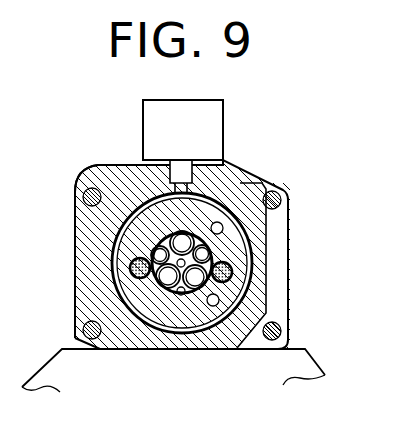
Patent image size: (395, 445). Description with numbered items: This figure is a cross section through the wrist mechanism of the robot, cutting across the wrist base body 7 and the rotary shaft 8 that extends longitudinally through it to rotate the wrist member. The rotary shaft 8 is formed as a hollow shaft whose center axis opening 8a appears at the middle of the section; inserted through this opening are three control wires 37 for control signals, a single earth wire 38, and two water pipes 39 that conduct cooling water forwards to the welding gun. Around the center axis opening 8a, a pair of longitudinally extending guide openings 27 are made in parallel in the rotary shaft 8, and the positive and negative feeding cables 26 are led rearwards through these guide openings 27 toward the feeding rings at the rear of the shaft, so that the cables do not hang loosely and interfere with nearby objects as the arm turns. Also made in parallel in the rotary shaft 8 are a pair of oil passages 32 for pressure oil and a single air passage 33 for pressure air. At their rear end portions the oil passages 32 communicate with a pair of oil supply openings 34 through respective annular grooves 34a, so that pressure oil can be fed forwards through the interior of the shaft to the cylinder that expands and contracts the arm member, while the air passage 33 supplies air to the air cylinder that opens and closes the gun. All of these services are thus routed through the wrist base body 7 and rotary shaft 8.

The wrist base body 7 is at (77, 215).
The rotary shaft 8 is at (203, 207).
The center axis opening 8a is at (186, 296).
The feeding cable 26 is at (131, 349).
The guide opening 27 is at (128, 269).
The oil passage 32 is at (262, 237).
The air passage 33 is at (108, 168).
The oil supply opening 34 is at (185, 175).
The annular groove 34a is at (155, 288).
The control wire 37 is at (140, 218).
The earth wire 38 is at (105, 232).
The water pipe 39 is at (180, 295).